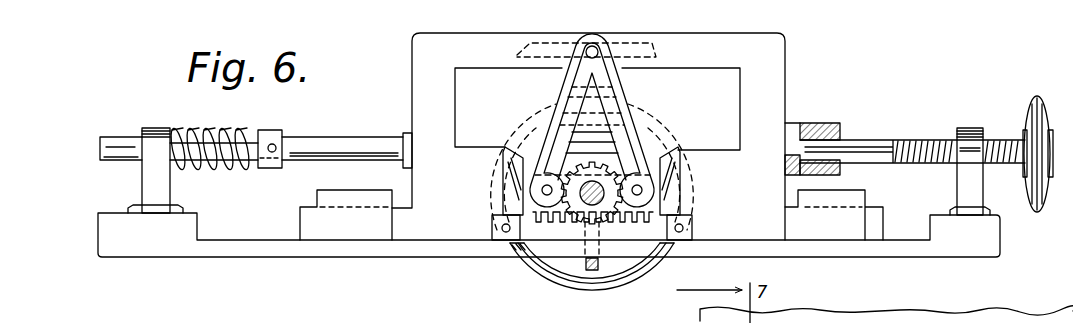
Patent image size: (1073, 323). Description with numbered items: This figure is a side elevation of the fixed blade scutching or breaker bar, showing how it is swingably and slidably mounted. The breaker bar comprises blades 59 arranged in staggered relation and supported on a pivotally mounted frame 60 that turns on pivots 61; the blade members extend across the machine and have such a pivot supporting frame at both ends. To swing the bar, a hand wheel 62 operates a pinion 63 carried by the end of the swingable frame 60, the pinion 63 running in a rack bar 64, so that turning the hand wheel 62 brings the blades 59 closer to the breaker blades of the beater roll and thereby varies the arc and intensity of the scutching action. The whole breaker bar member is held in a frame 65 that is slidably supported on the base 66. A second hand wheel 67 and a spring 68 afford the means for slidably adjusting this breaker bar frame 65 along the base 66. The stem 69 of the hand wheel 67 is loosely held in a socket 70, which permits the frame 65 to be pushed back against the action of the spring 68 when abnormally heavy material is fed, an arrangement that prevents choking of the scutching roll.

The blades 59 is at (638, 89).
The pivotally mounted frame 60 is at (560, 84).
The pivots 61 is at (601, 49).
The hand wheel 62 is at (530, 262).
The pinion 63 is at (587, 218).
The rack bar 64 is at (617, 233).
The frame 65 is at (414, 98).
The base 66 is at (415, 248).
The hand wheel 67 is at (1026, 118).
The spring 68 is at (238, 172).
The stem 69 is at (903, 163).
The socket 70 is at (848, 123).